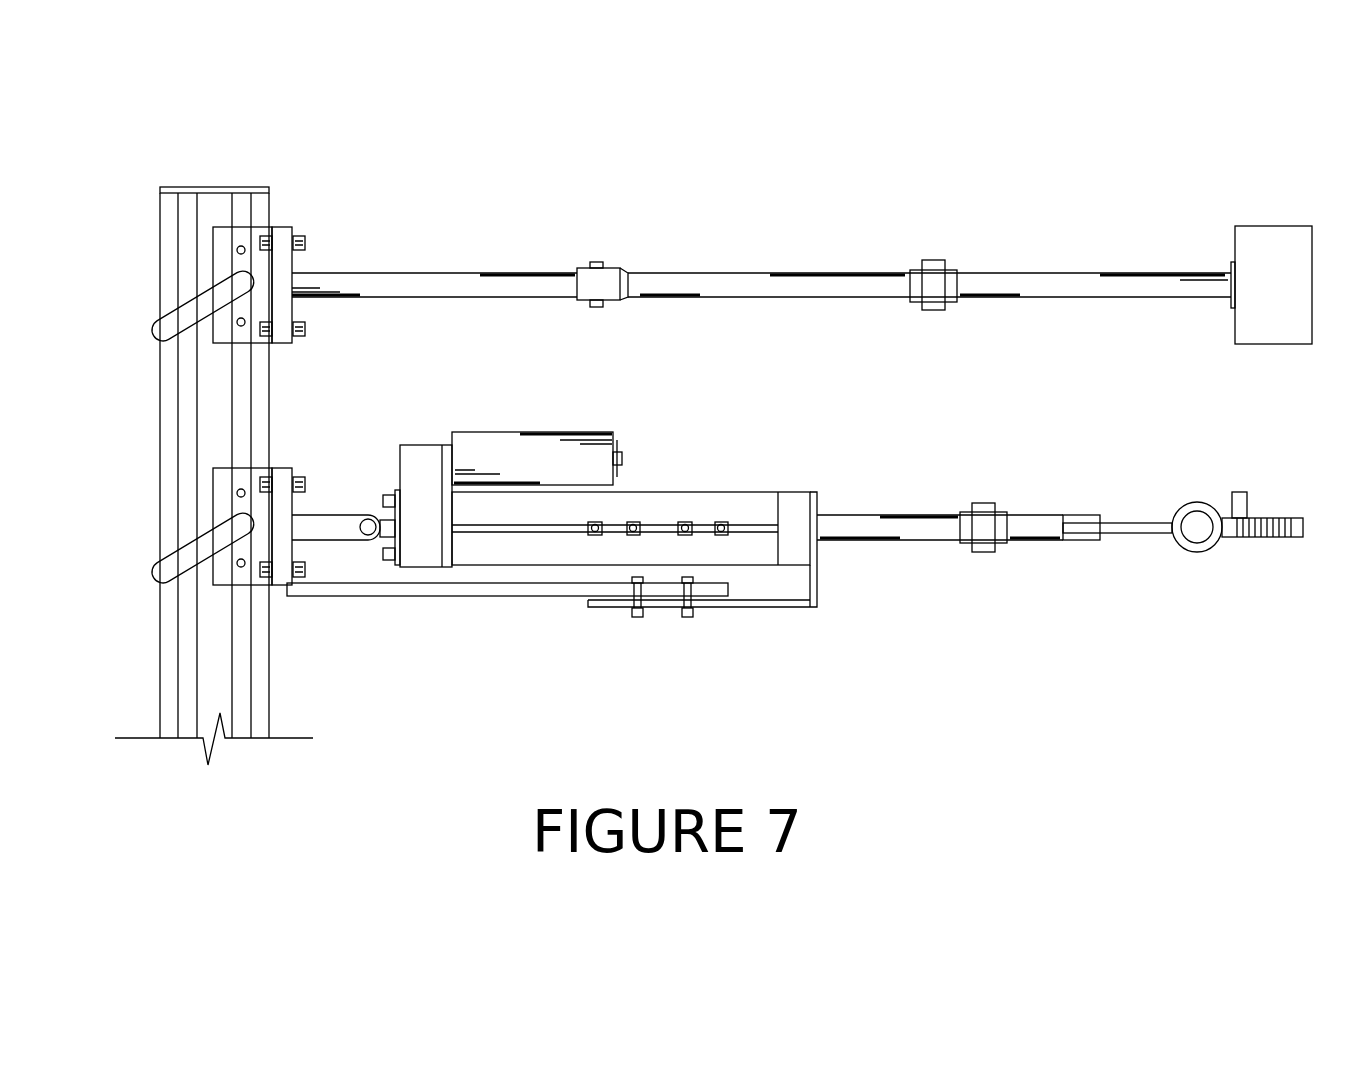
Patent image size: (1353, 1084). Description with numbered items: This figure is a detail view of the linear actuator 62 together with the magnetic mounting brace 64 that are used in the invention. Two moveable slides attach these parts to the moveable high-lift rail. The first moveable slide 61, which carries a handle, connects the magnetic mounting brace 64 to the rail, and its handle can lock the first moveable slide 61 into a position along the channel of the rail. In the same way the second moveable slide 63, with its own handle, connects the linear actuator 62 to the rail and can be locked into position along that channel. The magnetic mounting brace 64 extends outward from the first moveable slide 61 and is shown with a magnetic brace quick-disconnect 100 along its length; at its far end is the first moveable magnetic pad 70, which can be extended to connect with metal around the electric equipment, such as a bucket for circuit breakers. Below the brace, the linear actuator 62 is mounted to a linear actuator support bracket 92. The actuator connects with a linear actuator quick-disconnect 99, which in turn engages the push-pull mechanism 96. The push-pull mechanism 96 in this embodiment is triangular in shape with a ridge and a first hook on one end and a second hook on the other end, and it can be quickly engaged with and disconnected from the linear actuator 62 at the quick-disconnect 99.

The first moveable slide 61 is at (226, 244).
The second moveable slide 63 is at (225, 486).
The magnetic mounting brace 64 is at (911, 181).
The first moveable magnetic pad 70 is at (1283, 248).
The magnetic brace quick-disconnect 100 is at (938, 267).
The linear actuator 62 is at (960, 405).
The linear actuator support bracket 92 is at (817, 650).
The linear actuator quick-disconnect 99 is at (985, 553).
The push-pull mechanism 96 is at (1303, 405).